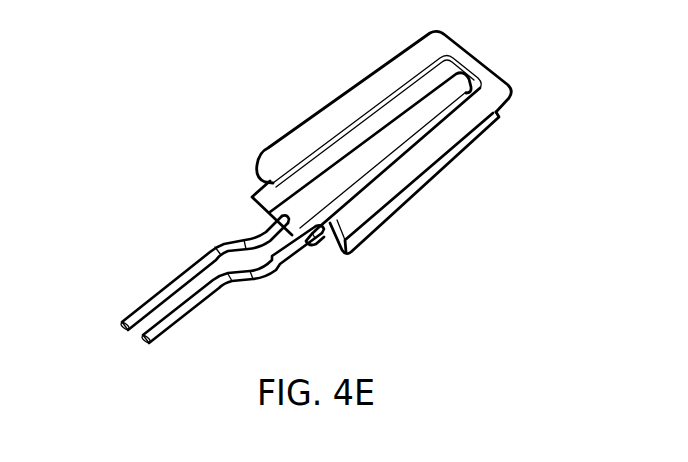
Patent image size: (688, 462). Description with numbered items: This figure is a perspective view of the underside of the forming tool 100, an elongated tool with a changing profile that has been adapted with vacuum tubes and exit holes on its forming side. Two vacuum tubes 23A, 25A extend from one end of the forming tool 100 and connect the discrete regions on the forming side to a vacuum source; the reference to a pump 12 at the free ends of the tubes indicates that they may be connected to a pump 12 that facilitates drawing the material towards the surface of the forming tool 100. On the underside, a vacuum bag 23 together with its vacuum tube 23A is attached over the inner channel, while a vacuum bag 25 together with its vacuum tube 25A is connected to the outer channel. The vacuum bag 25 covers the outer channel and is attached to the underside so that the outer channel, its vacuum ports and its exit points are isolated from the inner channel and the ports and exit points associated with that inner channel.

The forming tool 100 is at (542, 95).
The pump 12 is at (135, 340).
The vacuum bag 23 is at (272, 215).
The vacuum tube 23A is at (153, 292).
The vacuum bag 25 is at (311, 240).
The vacuum tube 25A is at (193, 313).